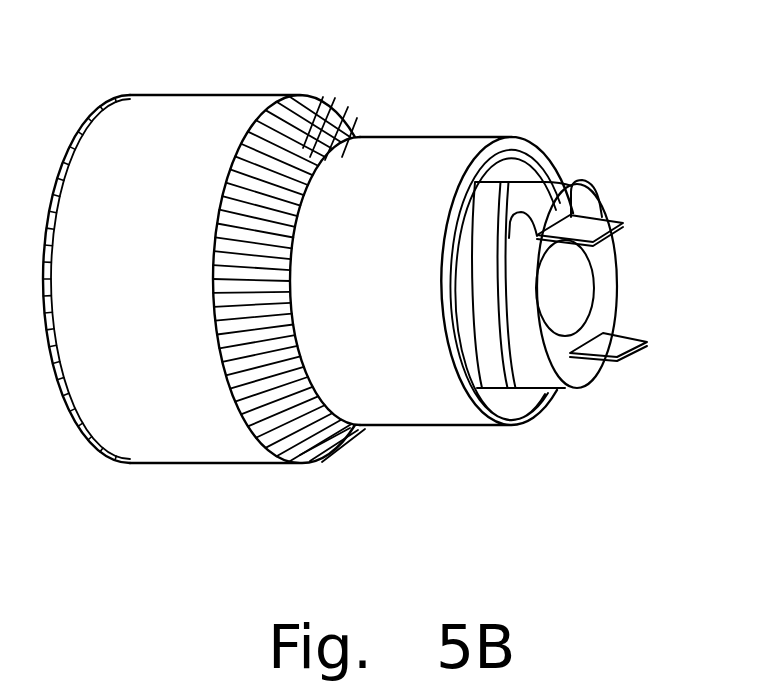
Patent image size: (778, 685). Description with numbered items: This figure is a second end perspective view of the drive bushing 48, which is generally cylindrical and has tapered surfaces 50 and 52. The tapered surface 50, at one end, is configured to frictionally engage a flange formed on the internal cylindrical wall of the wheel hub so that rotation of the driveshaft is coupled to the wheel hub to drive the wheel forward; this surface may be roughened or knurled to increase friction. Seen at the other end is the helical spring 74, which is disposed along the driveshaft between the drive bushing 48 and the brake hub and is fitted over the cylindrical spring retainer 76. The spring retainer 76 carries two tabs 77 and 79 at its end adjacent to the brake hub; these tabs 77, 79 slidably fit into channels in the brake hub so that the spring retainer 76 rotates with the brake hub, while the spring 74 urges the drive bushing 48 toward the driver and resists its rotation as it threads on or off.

The drive bushing 48 is at (215, 93).
The tapered surface 50 is at (102, 107).
The tapered surface 52 is at (347, 121).
The helical spring 74 is at (498, 383).
The spring retainer 76 is at (620, 266).
The tab 77 is at (600, 215).
The tab 79 is at (630, 332).